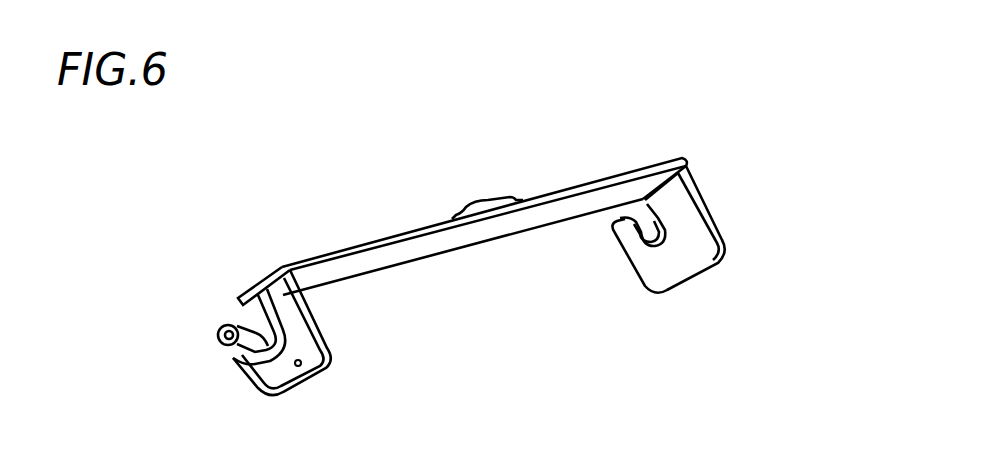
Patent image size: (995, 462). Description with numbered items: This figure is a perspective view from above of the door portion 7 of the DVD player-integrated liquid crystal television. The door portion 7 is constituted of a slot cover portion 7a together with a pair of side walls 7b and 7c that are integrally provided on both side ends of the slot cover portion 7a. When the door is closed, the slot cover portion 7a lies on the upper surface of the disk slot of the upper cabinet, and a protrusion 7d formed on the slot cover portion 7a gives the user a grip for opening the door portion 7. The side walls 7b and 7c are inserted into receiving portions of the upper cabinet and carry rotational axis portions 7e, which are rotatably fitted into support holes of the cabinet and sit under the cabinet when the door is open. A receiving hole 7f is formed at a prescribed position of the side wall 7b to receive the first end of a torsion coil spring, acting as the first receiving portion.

The door portion 7 is at (606, 183).
The slot cover portion 7a is at (452, 247).
The side wall 7b is at (240, 362).
The side wall 7c is at (707, 240).
The protrusion 7d is at (483, 200).
The rotational axis portion 7e is at (219, 334).
The receiving hole 7f is at (300, 366).